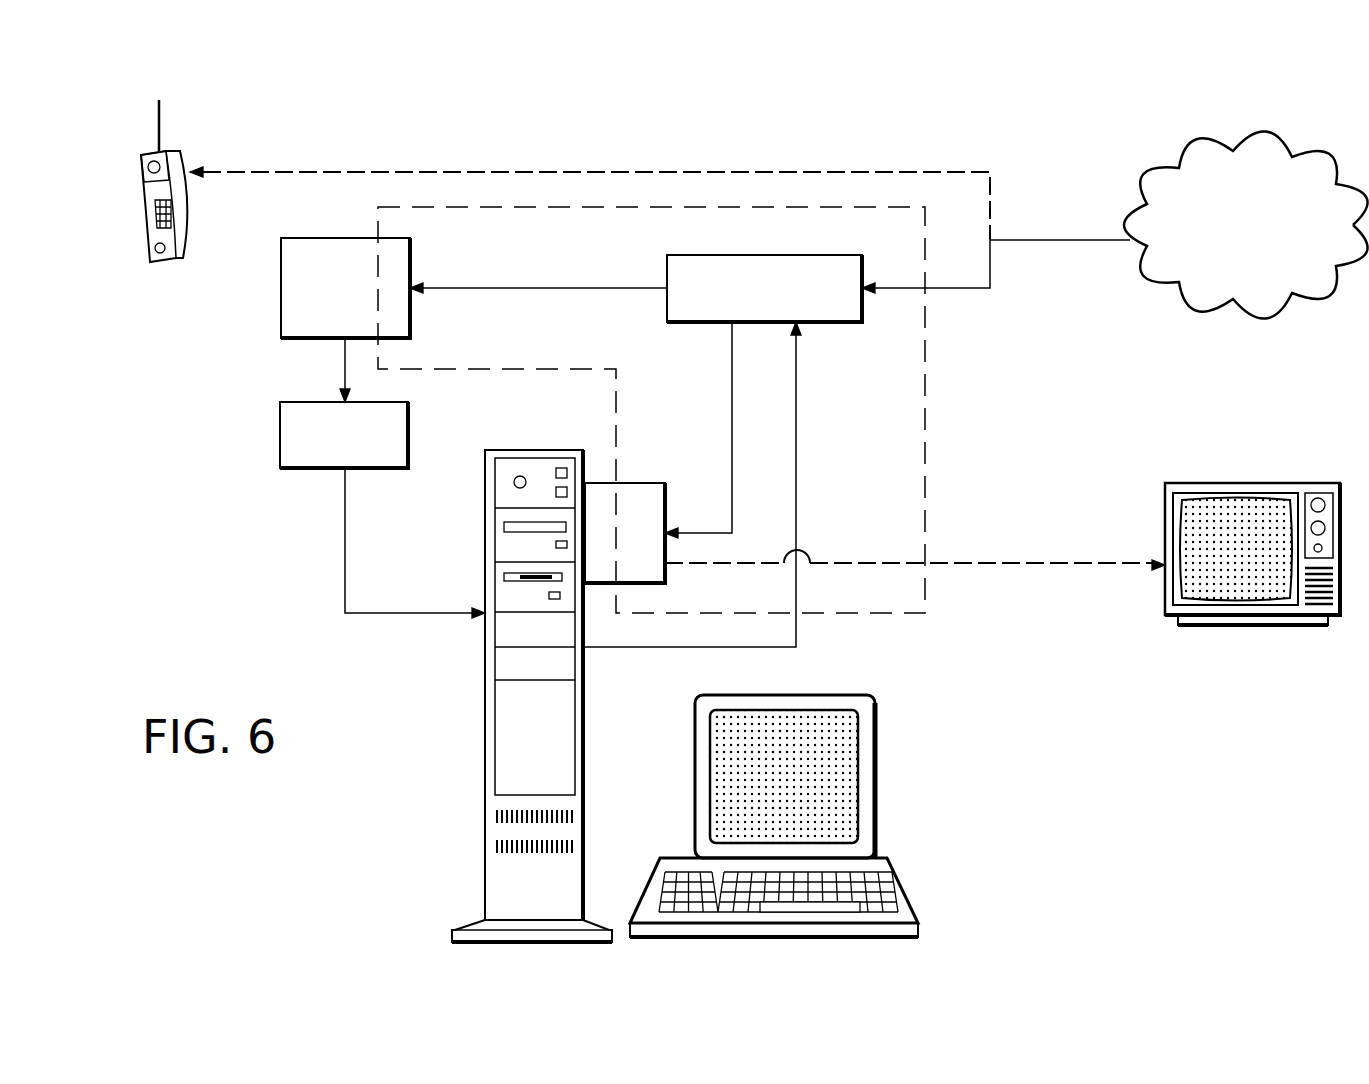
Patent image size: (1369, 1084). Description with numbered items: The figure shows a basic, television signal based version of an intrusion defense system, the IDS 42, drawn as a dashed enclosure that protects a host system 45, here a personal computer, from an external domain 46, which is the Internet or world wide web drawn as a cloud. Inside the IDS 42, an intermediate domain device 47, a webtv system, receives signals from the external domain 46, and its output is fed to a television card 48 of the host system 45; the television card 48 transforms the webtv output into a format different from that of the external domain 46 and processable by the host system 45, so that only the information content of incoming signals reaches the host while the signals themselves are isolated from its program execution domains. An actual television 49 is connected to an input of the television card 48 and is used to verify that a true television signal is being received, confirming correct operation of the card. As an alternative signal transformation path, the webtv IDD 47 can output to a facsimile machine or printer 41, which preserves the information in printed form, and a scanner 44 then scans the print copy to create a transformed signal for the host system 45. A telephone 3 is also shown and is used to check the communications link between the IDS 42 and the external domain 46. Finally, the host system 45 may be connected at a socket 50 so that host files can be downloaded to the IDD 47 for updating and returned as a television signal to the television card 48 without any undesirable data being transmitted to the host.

The wireless telephone 3 is at (143, 212).
The facsimile machine or printer 41 is at (281, 298).
The television signal based IDS 42 is at (480, 207).
The scanner 44 is at (280, 432).
The host-system 45 is at (485, 828).
The external-domain 46 is at (1258, 237).
The intermediate domain device (IDD) 47 is at (750, 255).
The television card 48 is at (637, 483).
The television 49 is at (1253, 625).
The socket 50 is at (692, 648).